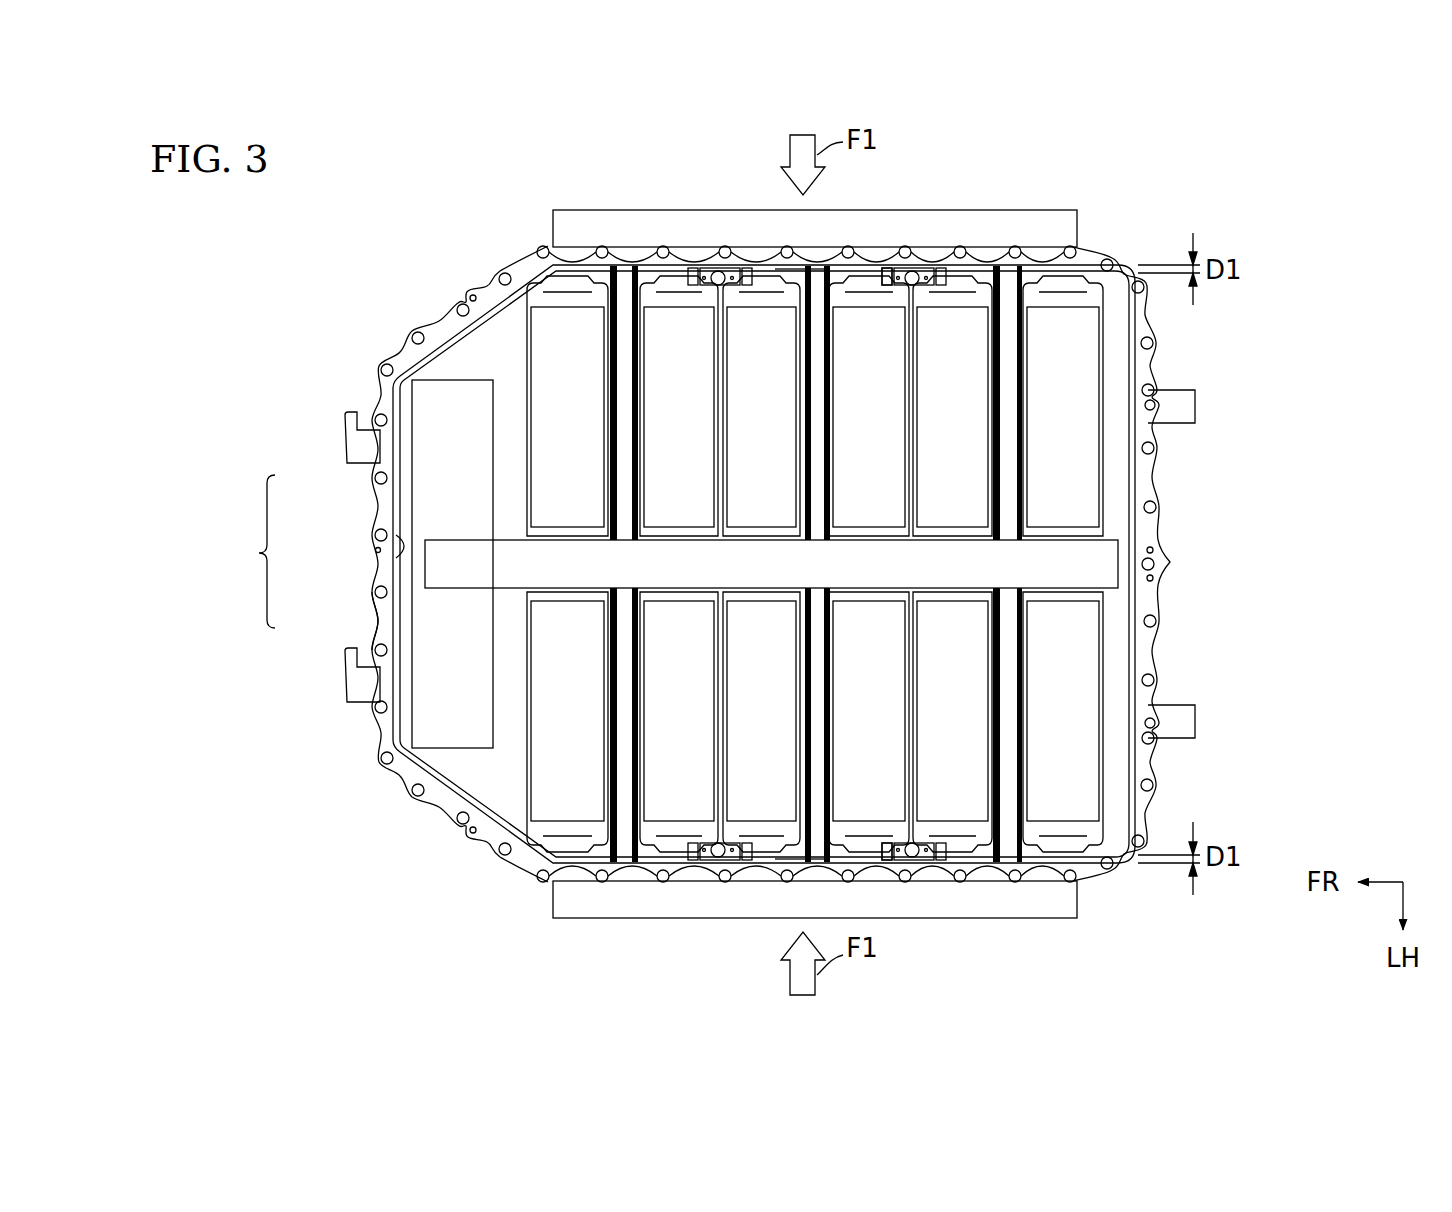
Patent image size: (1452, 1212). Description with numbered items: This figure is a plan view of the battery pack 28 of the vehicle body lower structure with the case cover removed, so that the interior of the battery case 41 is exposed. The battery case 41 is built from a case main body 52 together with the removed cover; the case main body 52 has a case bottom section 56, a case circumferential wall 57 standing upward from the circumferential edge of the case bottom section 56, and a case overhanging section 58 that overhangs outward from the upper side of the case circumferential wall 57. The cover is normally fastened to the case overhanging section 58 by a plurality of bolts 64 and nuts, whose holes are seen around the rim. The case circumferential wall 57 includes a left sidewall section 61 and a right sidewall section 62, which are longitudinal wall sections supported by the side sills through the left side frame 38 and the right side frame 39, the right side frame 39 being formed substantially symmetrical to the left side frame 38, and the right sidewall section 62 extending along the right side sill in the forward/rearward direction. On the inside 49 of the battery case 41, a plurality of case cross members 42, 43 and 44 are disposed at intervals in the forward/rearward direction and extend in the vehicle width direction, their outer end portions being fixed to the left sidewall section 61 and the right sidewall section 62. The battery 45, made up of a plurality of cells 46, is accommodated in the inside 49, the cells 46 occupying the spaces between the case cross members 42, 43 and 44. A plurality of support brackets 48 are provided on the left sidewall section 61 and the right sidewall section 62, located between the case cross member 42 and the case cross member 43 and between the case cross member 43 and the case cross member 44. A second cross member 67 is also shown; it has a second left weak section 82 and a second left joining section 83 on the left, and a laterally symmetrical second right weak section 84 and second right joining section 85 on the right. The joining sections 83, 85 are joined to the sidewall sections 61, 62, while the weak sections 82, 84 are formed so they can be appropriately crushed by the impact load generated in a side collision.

The battery pack 28 is at (468, 252).
The left side frame 38 is at (600, 912).
The right side frame 39 is at (600, 222).
The battery case 41 is at (435, 322).
The case cross member 42 is at (620, 470).
The case cross member 43 is at (800, 448).
The case cross member 44 is at (1010, 640).
The battery 45 is at (855, 300).
The cell 46 is at (663, 352).
The support bracket 48 is at (708, 266).
The inside of the battery case 49 is at (936, 694).
The case main body 52 is at (250, 551).
The case bottom section 56 is at (507, 498).
The case circumferential wall 57 is at (400, 557).
The case overhanging section 58 is at (378, 632).
The left sidewall section 61 is at (874, 860).
The right sidewall section 62 is at (886, 268).
The bolt 64 is at (415, 342).
The second cross member 67 is at (820, 400).
The second left weak section 82 is at (808, 862).
The second left joining section 83 is at (785, 862).
The second right weak section 84 is at (813, 265).
The second right joining section 85 is at (787, 265).